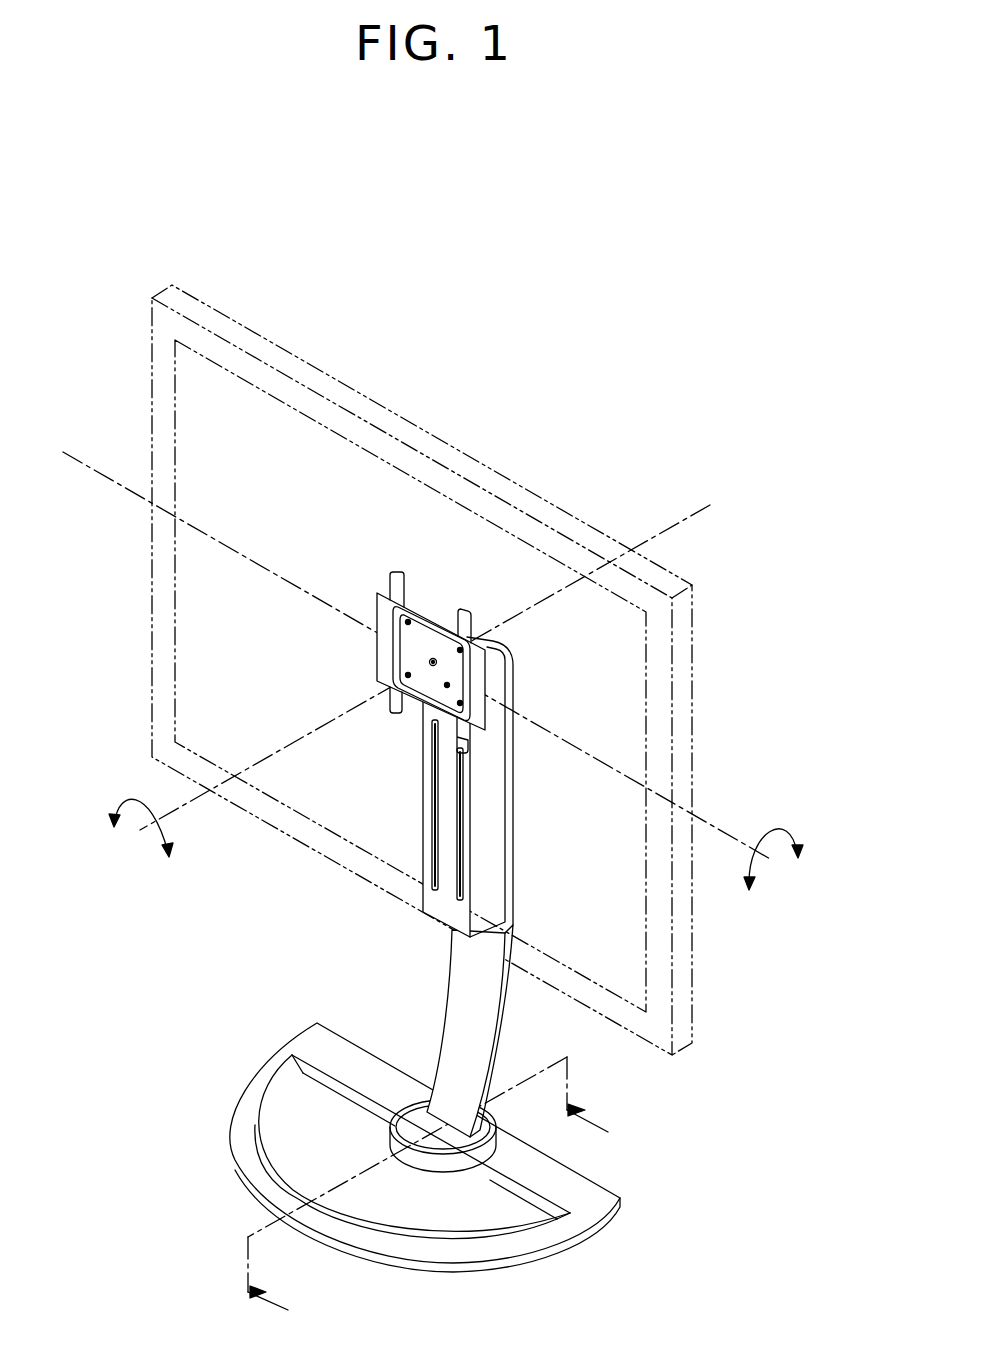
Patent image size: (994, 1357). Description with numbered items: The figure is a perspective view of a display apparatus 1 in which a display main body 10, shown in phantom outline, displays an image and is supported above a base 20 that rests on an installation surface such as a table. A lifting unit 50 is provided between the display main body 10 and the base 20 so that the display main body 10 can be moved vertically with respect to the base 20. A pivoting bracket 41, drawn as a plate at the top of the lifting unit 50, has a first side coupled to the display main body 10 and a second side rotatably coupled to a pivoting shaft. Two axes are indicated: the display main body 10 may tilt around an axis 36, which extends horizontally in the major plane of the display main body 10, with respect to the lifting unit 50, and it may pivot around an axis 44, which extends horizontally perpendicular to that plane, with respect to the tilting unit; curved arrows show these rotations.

The display apparatus 1 is at (648, 327).
The display main body 10 is at (288, 350).
The base 20 is at (603, 1232).
The axis 36 is at (92, 467).
The pivoting bracket 41 is at (410, 590).
The axis 44 is at (700, 512).
The lifting unit 50 is at (510, 810).